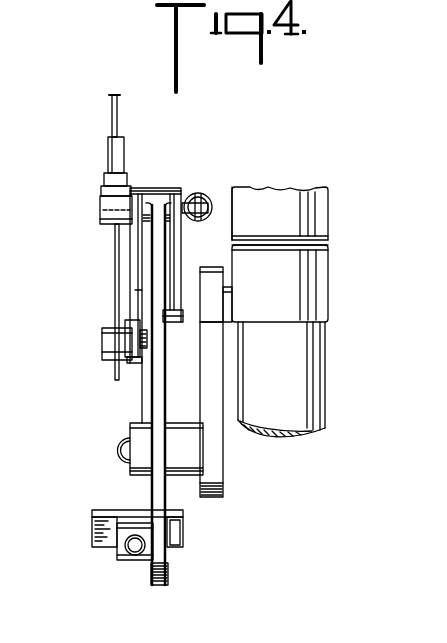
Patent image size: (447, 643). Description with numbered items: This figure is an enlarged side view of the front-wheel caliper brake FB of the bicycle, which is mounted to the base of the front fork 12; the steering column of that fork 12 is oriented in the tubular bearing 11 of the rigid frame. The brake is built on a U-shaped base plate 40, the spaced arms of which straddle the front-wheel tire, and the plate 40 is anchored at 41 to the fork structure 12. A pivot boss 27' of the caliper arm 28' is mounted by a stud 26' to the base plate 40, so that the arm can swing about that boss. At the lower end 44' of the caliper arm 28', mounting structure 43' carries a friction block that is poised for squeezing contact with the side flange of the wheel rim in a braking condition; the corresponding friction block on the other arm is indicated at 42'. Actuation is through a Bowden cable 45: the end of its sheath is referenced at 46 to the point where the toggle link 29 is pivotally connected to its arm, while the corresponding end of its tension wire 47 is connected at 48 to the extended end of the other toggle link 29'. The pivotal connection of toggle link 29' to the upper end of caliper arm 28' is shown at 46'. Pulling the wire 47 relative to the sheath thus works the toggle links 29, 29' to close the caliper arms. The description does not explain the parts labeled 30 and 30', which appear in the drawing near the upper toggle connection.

The tubular bearing 11 is at (312, 220).
The front fork 12 is at (333, 362).
The stud 26' is at (127, 449).
The pivot boss 27' is at (110, 492).
The caliper arm 28' is at (131, 394).
The toggle link 29 is at (176, 305).
The toggle link 29' is at (103, 295).
The slot 30 is at (104, 299).
The pivot 30' is at (218, 163).
The U-shaped base plate 40 is at (208, 388).
The anchorage 41 is at (226, 297).
The base block 42' is at (106, 528).
The mounting structure 43' is at (124, 569).
The lower end of caliper arm 44' is at (189, 579).
The Bowden cable 45 is at (131, 157).
The sheath end reference 46 is at (88, 210).
The pivotal connection 46' is at (182, 181).
The tension wire 47 is at (117, 127).
The tension wire connection 48 is at (103, 340).
The front-wheel caliper brake FB is at (238, 168).